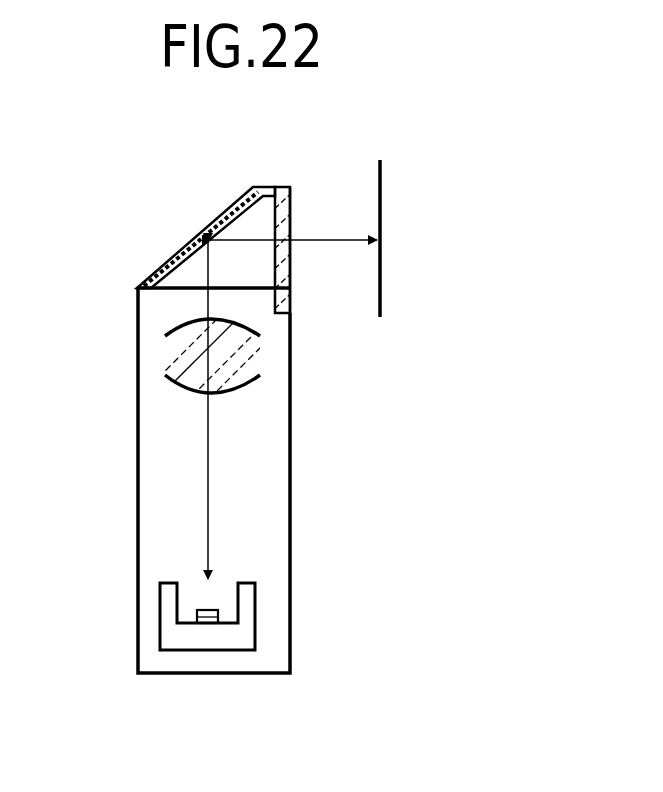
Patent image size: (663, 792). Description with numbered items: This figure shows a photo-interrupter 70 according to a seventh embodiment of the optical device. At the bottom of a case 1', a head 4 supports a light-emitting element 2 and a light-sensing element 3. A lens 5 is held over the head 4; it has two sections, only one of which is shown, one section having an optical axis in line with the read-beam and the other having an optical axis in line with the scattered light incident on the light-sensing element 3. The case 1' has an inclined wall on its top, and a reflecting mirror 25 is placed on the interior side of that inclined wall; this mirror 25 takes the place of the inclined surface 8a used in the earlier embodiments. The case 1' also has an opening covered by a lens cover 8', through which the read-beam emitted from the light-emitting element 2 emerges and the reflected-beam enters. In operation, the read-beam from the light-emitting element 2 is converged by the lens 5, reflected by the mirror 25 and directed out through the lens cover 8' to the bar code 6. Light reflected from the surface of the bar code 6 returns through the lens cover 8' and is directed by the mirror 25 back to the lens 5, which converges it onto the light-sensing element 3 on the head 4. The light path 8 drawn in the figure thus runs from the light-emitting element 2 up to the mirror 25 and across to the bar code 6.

The photo-interrupter 70 is at (525, 242).
The case 1' is at (177, 480).
The prism 8 is at (215, 230).
The reflecting mirror 25 is at (150, 276).
The lens cover 8' is at (318, 230).
The inclined surface 8a is at (293, 300).
The bar code 6 is at (383, 182).
The lens 5 is at (250, 357).
The head 4 is at (160, 613).
The light-emitting element 2 is at (275, 545).
The light-sensing element 3 is at (213, 610).